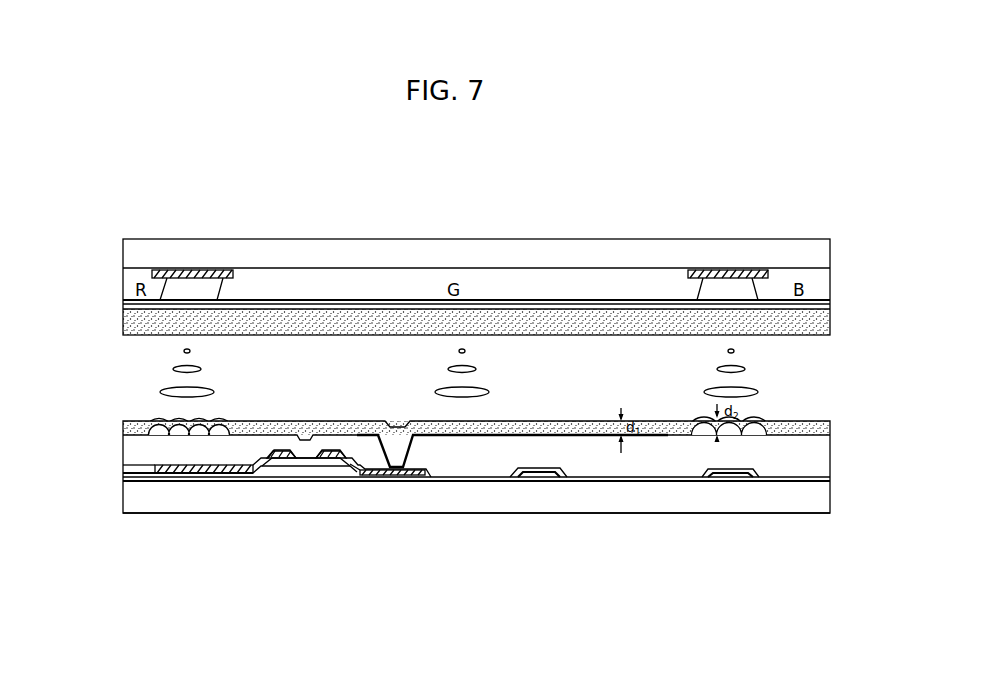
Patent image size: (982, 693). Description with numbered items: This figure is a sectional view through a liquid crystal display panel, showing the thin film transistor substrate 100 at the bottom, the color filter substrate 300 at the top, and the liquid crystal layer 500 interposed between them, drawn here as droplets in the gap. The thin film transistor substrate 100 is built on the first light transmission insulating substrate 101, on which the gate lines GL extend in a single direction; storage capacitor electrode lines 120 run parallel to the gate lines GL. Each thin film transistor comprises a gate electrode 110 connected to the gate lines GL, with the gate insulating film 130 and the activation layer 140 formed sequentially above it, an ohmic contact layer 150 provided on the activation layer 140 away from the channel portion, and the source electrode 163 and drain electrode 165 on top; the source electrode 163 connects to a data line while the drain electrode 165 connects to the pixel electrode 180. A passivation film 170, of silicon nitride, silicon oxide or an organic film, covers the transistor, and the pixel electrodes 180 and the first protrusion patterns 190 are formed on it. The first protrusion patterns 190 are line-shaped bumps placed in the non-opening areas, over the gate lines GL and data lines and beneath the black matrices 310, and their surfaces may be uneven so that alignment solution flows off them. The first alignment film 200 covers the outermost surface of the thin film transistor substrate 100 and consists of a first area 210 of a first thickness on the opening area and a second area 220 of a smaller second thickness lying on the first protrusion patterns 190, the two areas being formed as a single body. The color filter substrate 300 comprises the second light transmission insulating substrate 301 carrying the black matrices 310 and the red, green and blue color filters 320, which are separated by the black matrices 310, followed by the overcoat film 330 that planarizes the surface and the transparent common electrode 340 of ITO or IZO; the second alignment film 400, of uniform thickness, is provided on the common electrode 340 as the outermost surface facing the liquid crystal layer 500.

The color filter substrate 300 is at (738, 222).
The second light transmission insulating substrate 301 is at (270, 256).
The black matrices 310 is at (189, 270).
The color filters 320 is at (586, 284).
The overcoat film 330 is at (123, 301).
The common electrode 340 is at (123, 310).
The second alignment film 400 is at (375, 320).
The liquid crystal layer 500 is at (490, 392).
The thin film transistor substrate 100 is at (105, 482).
The first light transmission insulating substrate 101 is at (135, 500).
The gate electrodes 110 is at (307, 483).
The storage capacitor electrode lines 120 is at (537, 479).
The gate insulating film 130 is at (448, 482).
The activation layer 140 is at (250, 460).
The ohmic contact layer 150 is at (232, 472).
The source electrodes 163 is at (278, 458).
The drain electrodes 165 is at (388, 478).
The passivation film 170 is at (494, 470).
The pixel electrodes 180 is at (608, 445).
The first protrusion patterns 190 is at (163, 448).
The first alignment film 200 is at (642, 584).
The first area 210 is at (660, 445).
The second area 220 is at (758, 438).
The gate lines GL is at (745, 476).